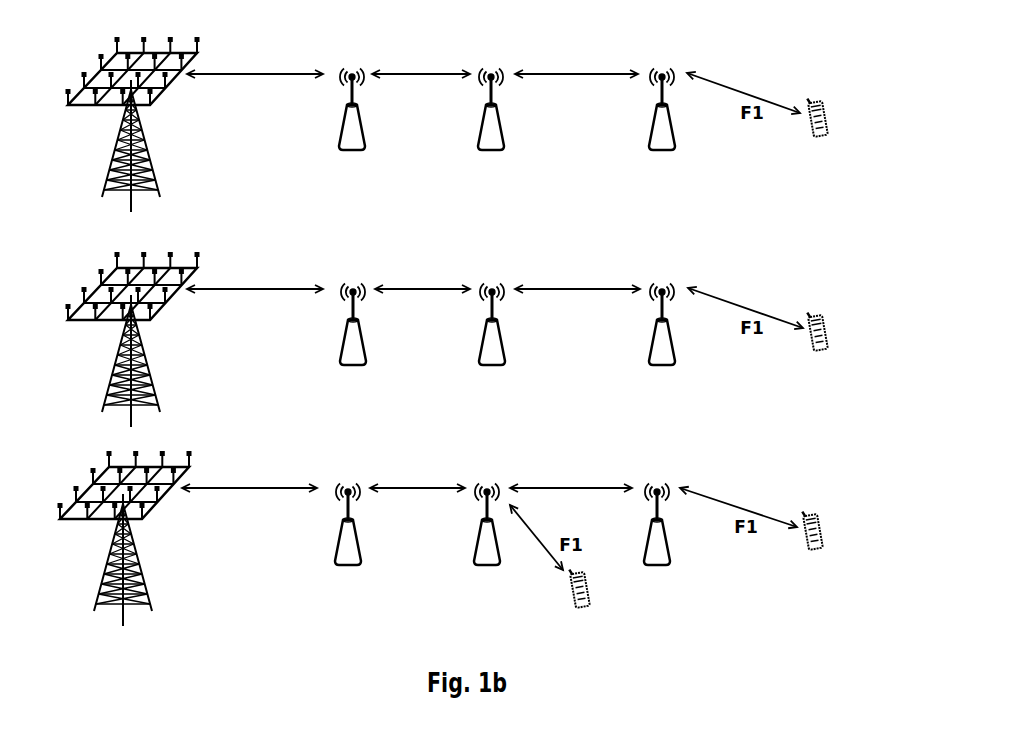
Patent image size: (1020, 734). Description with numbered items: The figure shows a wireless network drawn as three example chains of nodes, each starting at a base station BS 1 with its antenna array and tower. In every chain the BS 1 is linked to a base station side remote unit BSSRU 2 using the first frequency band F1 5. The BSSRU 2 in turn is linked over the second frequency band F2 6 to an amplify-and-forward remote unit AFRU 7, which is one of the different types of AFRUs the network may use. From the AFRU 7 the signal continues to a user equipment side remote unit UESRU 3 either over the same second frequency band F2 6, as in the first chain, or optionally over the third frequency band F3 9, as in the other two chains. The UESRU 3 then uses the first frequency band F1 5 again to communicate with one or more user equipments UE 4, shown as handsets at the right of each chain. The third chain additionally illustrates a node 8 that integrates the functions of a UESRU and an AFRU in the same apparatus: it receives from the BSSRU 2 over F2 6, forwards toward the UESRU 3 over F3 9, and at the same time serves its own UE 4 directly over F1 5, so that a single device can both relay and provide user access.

The base station (BS) 1 is at (163, 170).
The base station side remote unit (BSSRU) 2 is at (375, 140).
The user equipment side remote unit (UESRU) 3 is at (687, 142).
The user equipment (UE) 4 is at (843, 124).
The first frequency band F1 5 is at (275, 93).
The second frequency band F2 6 is at (404, 91).
The amplify-and-forward remote unit (AFRU) 7 is at (517, 140).
The node integrating the function of a UESRU and an AFRU 8 is at (462, 553).
The third frequency band F3 9 is at (590, 308).